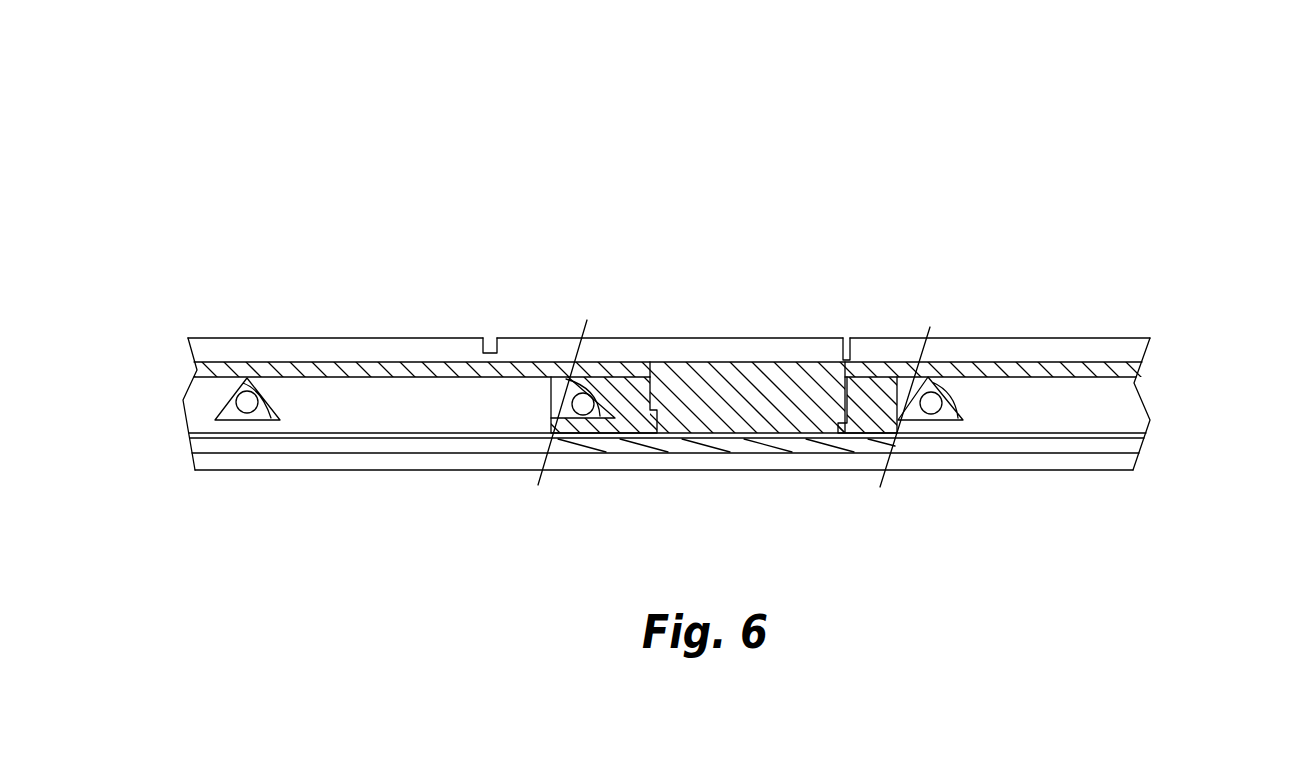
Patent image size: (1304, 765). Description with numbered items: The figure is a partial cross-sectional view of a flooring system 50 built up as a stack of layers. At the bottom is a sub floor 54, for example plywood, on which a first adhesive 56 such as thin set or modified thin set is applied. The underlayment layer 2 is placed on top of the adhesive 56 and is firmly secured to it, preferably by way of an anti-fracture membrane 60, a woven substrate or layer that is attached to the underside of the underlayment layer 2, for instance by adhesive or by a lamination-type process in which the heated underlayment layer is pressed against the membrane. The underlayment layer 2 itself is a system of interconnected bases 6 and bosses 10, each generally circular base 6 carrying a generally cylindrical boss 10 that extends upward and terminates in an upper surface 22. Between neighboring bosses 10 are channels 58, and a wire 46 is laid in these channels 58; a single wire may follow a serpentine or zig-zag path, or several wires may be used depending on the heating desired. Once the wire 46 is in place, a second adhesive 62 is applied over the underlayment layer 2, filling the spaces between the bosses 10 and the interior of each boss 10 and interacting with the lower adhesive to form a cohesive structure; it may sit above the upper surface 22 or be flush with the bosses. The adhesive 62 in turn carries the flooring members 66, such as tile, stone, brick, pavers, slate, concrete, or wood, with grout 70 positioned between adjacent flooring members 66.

The flooring system 50 is at (662, 128).
The underlayment layer 2 is at (1125, 400).
The base 6 is at (928, 427).
The boss 10 is at (520, 400).
The upper surface 22 is at (381, 362).
The wire 46 is at (245, 398).
The sub floor 54 is at (1010, 460).
The adhesive 56 is at (1122, 446).
The channel 58 is at (264, 405).
The anti-fracture membrane 60 is at (1142, 437).
The adhesive 62 is at (1037, 364).
The flooring member 66 is at (432, 348).
The grout 70 is at (497, 358).